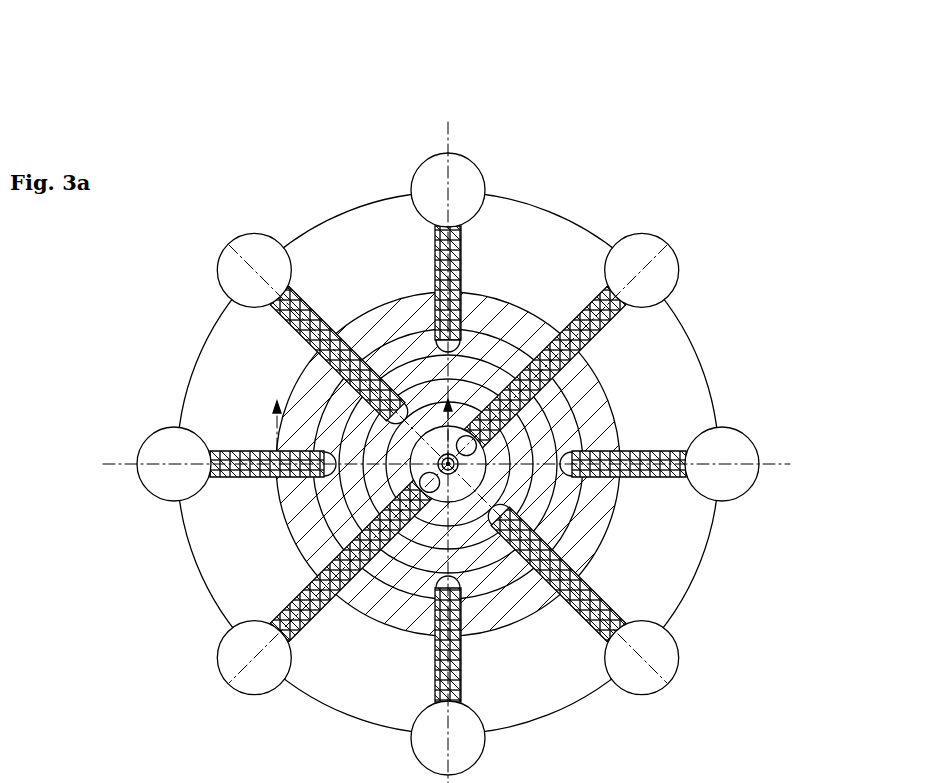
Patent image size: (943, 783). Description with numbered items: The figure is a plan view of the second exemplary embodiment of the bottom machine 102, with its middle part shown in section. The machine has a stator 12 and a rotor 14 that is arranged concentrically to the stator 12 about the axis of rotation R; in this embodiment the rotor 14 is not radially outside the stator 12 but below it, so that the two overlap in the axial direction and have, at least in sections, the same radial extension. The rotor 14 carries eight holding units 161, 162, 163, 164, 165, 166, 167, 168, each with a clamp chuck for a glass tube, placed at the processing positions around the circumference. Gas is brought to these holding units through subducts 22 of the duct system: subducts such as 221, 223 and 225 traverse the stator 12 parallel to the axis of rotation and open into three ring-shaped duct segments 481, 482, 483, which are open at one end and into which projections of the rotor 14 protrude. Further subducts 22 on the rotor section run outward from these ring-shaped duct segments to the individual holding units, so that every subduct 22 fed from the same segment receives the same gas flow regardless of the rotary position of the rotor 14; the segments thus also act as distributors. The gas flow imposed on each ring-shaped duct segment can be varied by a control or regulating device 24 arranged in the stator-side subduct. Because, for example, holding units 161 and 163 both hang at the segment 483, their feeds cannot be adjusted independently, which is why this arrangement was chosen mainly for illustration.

The bottom machine 102 is at (449, 400).
The stator 12 is at (610, 530).
The rotor 14 is at (712, 537).
The holding unit 161 is at (448, 190).
The holding unit 162 is at (254, 270).
The holding unit 163 is at (174, 464).
The holding unit 164 is at (254, 658).
The holding unit 165 is at (448, 738).
The holding unit 166 is at (642, 658).
The holding unit 167 is at (722, 464).
The holding unit 168 is at (642, 270).
The subduct 221 is at (416, 283).
The subduct 223 is at (267, 498).
The subduct 225 is at (415, 645).
The subduct 22 is at (607, 776).
The control or regulating device 24 is at (711, 776).
The ring-shaped duct segment 481 is at (470, 382).
The ring-shaped duct segment 482 is at (506, 464).
The ring-shaped duct segment 483 is at (448, 511).